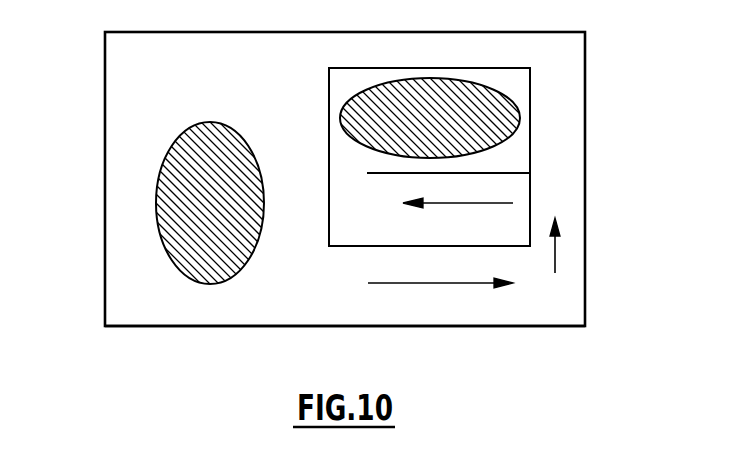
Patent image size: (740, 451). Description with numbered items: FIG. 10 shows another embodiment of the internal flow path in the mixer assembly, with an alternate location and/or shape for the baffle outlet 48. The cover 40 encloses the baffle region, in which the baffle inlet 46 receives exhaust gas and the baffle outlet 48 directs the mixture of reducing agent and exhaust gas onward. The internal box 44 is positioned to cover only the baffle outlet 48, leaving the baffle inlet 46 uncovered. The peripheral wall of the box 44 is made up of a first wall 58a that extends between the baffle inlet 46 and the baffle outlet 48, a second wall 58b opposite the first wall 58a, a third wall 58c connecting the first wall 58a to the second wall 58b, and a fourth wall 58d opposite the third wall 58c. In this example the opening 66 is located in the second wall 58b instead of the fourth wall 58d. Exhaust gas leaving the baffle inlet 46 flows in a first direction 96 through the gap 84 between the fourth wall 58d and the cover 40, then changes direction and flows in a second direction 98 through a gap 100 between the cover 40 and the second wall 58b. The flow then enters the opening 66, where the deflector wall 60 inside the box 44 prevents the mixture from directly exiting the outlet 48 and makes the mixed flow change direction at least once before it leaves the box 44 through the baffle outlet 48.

The cover 40 is at (596, 52).
The internal box 44 is at (546, 121).
The baffle inlet 46 is at (160, 249).
The baffle outlet 48 is at (412, 102).
The first wall 58a is at (328, 120).
The second wall 58b is at (532, 98).
The third wall 58c is at (482, 68).
The fourth wall 58d is at (358, 248).
The deflector wall 60 is at (506, 173).
The opening 66 is at (560, 210).
The gap 84 is at (447, 308).
The first direction 96 is at (397, 283).
The second direction 98 is at (555, 258).
The gap 100 is at (562, 150).